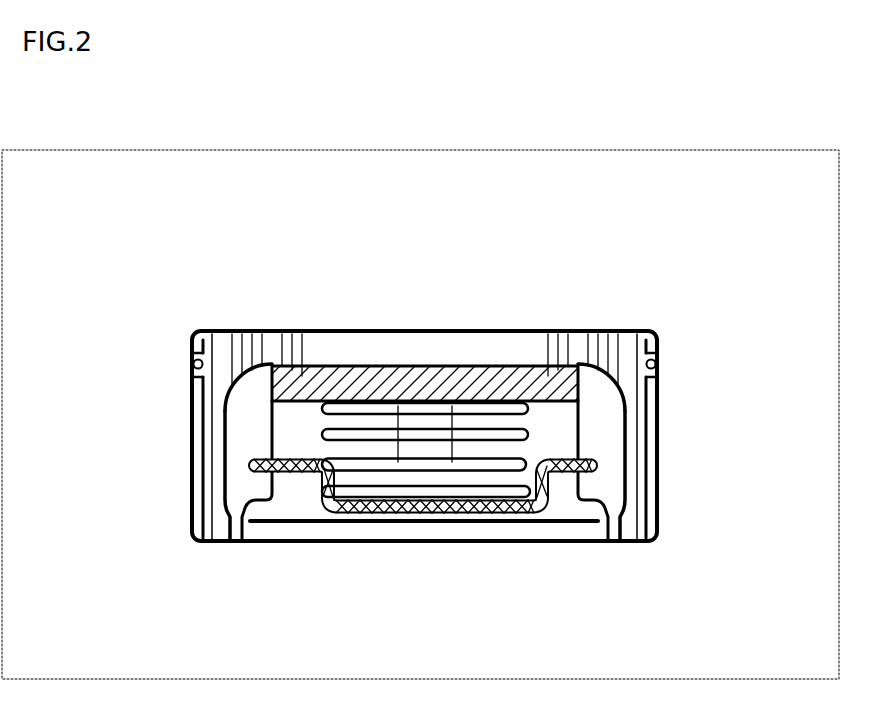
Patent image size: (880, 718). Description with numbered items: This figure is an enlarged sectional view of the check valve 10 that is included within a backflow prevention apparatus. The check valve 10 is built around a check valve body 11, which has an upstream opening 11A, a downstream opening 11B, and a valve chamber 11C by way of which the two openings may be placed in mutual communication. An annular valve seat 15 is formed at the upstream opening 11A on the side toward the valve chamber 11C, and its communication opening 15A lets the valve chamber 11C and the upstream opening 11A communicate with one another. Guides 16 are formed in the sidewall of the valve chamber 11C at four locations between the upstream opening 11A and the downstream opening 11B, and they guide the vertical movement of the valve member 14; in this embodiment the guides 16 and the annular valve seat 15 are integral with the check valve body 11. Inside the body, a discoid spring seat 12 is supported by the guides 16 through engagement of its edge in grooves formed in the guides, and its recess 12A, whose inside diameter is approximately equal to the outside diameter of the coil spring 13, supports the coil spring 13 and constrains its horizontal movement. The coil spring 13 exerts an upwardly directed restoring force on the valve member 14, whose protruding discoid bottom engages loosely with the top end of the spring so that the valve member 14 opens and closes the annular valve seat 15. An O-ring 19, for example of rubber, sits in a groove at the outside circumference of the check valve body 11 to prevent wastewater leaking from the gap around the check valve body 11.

The check valve 10 is at (195, 284).
The check valve body 11 is at (192, 337).
The upstream opening 11A is at (443, 348).
The downstream opening 11B is at (428, 530).
The valve chamber 11C is at (600, 411).
The spring seat 12 is at (447, 516).
The recess 12A is at (502, 484).
The coil spring 13 is at (560, 420).
The valve member 14 is at (509, 403).
The annular valve seat 15 is at (306, 366).
The communication opening 15A is at (395, 366).
The guides 16 is at (258, 421).
The O-ring 19 is at (659, 360).